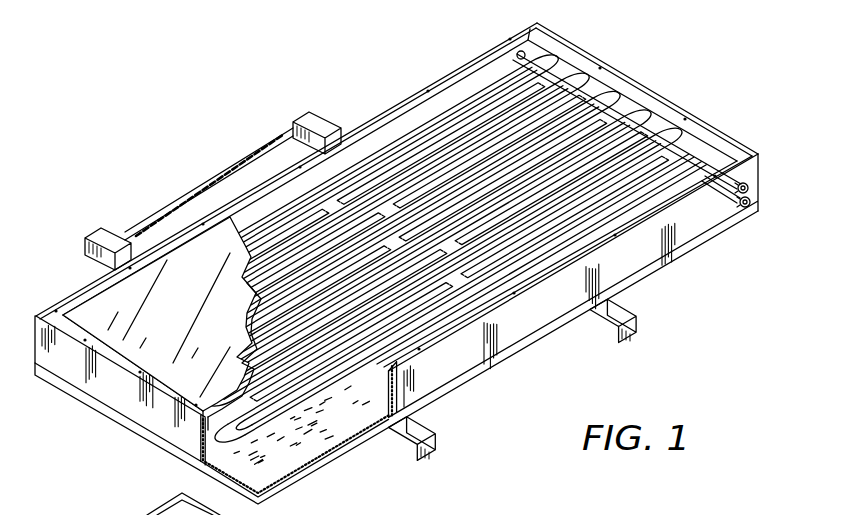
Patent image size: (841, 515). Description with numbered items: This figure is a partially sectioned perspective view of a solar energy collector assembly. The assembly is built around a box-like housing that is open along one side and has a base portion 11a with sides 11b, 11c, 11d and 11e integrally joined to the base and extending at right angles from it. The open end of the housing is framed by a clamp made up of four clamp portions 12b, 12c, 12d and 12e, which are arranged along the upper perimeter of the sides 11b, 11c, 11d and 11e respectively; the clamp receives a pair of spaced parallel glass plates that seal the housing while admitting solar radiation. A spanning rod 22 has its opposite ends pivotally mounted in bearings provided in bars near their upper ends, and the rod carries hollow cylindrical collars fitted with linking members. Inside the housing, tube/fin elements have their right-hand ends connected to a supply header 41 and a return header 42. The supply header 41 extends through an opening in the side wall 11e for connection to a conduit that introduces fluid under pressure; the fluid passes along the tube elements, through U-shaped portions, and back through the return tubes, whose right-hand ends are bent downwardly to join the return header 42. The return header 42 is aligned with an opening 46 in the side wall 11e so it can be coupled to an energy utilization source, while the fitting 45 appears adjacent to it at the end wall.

The base portion 11a is at (355, 440).
The side 11b is at (160, 420).
The side 11c is at (388, 130).
The side 11d is at (643, 110).
The side wall 11e is at (693, 240).
The clamp portion 12b is at (125, 363).
The clamp portion 12c is at (100, 283).
The clamp portion 12d is at (608, 72).
The clamp portion 12e is at (535, 283).
The spanning rod 22 is at (213, 173).
The supply header 41 is at (673, 140).
The return header 42 is at (693, 160).
The inlet fitting 45 is at (750, 184).
The opening 46 is at (738, 207).